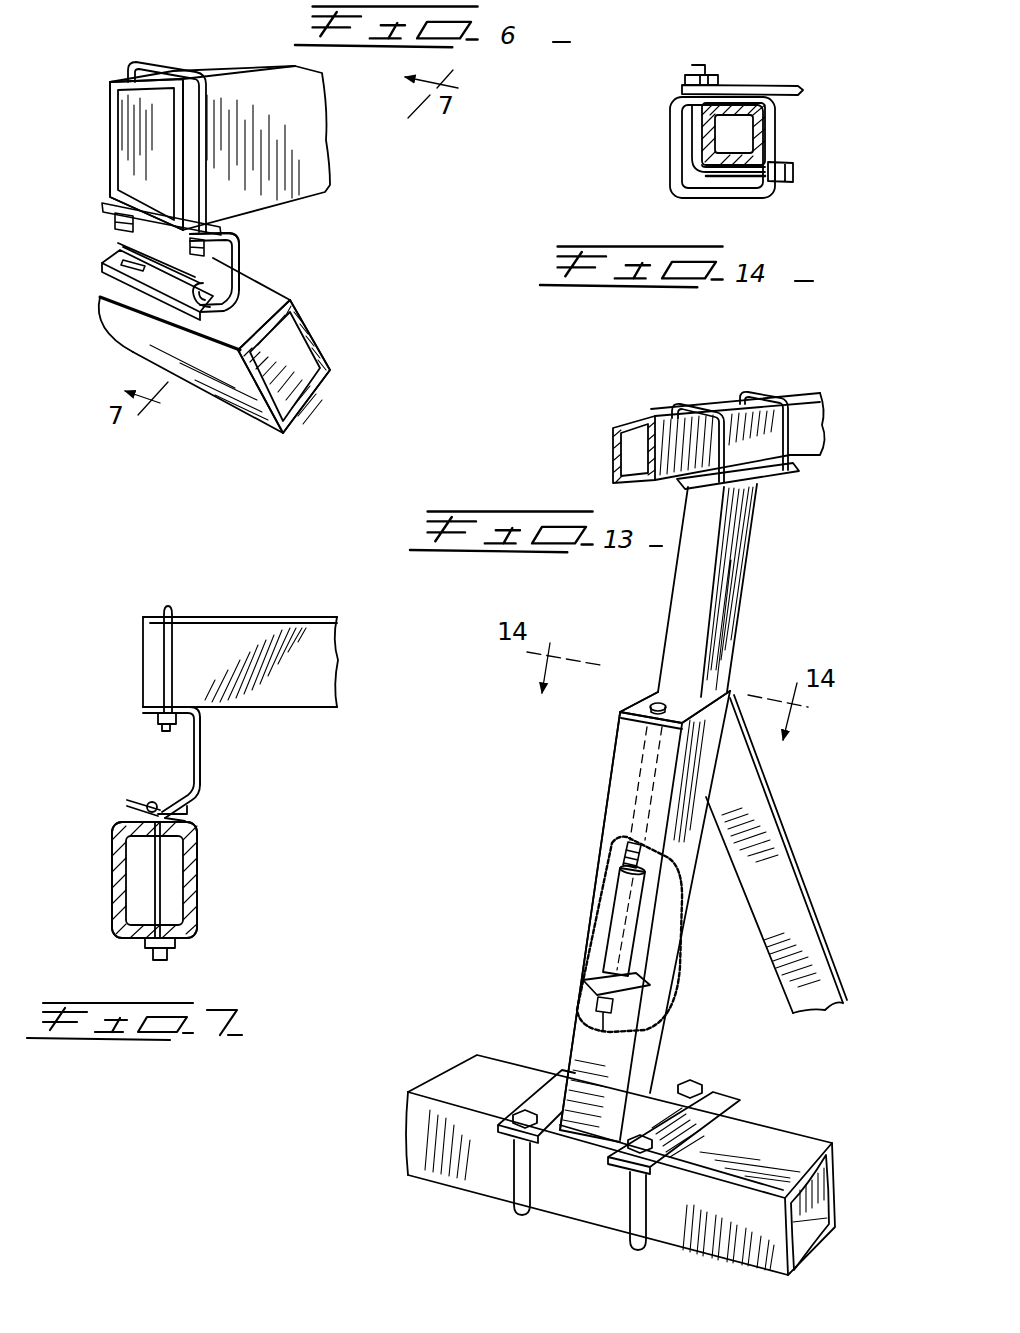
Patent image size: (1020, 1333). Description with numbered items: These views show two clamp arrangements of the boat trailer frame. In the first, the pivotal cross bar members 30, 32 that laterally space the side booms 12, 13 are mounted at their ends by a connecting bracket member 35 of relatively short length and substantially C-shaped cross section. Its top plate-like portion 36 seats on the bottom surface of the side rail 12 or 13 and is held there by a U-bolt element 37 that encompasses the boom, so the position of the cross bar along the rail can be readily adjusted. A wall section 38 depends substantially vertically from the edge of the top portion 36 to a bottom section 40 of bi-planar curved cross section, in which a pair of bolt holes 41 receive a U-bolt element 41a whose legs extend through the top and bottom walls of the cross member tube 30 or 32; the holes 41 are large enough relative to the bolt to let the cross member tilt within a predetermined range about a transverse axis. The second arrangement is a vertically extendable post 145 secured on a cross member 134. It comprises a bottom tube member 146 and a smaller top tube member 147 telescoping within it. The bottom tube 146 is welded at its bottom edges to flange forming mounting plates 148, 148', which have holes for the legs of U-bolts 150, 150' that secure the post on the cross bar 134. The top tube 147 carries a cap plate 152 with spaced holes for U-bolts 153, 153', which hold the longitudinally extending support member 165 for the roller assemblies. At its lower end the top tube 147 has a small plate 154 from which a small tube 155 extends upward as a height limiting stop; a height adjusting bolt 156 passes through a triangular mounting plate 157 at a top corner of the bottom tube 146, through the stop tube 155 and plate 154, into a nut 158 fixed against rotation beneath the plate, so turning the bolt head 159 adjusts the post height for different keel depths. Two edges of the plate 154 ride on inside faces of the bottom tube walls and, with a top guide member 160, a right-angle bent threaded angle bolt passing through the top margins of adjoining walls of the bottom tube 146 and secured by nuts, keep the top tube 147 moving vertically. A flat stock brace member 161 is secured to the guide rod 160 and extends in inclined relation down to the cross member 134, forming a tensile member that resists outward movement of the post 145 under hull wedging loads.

In FIG. 6, the side boom 12 is at (313, 163).
In FIG. 7, the side boom 12 is at (217, 643).
In FIG. 6, the side boom 13 is at (265, 272).
In FIG. 7, the side boom 13 is at (240, 639).
In FIG. 6, the cross bar member 30 is at (233, 397).
In FIG. 7, the cross bar member 30 is at (200, 857).
In FIG. 6, the cross bar member 32 is at (284, 391).
In FIG. 7, the cross bar member 32 is at (223, 880).
In FIG. 6, the connecting bracket member 35 is at (295, 238).
In FIG. 7, the connecting bracket member 35 is at (180, 765).
In FIG. 6, the top plate-like portion 36 is at (113, 230).
In FIG. 6, the U-bolt element 37 is at (170, 64).
In FIG. 7, the U-bolt element 37 is at (166, 648).
In FIG. 6, the wall section 38 is at (240, 272).
In FIG. 7, the wall section 38 is at (196, 737).
In FIG. 6, the bottom section 40 is at (160, 288).
In FIG. 7, the bottom section 40 is at (198, 805).
In FIG. 6, the bolt holes 41 is at (127, 262).
In FIG. 6, the U-bolt element 41a is at (183, 282).
In FIG. 7, the U-bolt element 41a is at (153, 802).
In FIG. 13, the cross member 134 is at (730, 1247).
In FIG. 13, the upright post forming member 145 is at (602, 810).
In FIG. 14, the bottom tube member 146 is at (673, 168).
In FIG. 13, the bottom tube member 146 is at (587, 1033).
In FIG. 14, the top tube member 147 is at (763, 147).
In FIG. 13, the top tube member 147 is at (690, 626).
In FIG. 13, the mounting plate 148 is at (699, 1122).
In FIG. 13, the mounting plate 148' is at (474, 1090).
In FIG. 13, the U-bolt 150 is at (613, 1232).
In FIG. 13, the U-bolt 150' is at (505, 1199).
In FIG. 13, the cap plate 152 is at (773, 472).
In FIG. 13, the U-bolt 153 is at (697, 423).
In FIG. 13, the U-bolt 153' is at (768, 407).
In FIG. 13, the small plate 154 is at (597, 973).
In FIG. 13, the small tube 155 is at (620, 897).
In FIG. 13, the height adjusting bolt 156 is at (630, 855).
In FIG. 13, the triangular mounting plate 157 is at (645, 703).
In FIG. 13, the nut 158 is at (643, 1025).
In FIG. 13, the bolt head 159 is at (652, 700).
In FIG. 14, the top guide member 160 is at (697, 137).
In FIG. 14, the brace member 161 is at (770, 83).
In FIG. 13, the brace member 161 is at (827, 955).
In FIG. 13, the support member 165 is at (648, 425).